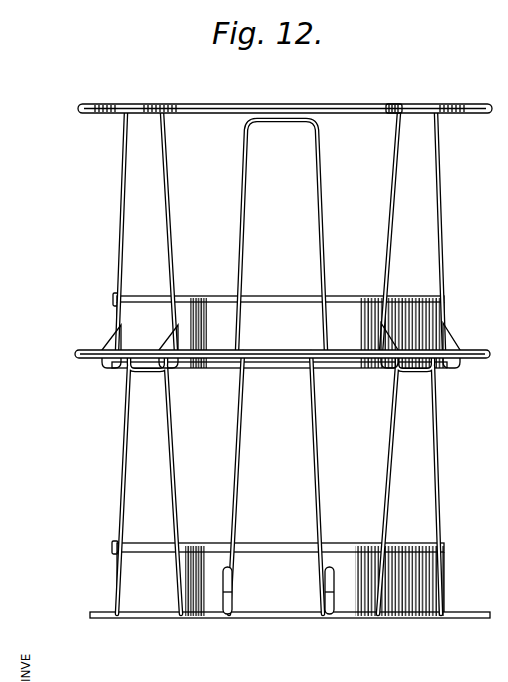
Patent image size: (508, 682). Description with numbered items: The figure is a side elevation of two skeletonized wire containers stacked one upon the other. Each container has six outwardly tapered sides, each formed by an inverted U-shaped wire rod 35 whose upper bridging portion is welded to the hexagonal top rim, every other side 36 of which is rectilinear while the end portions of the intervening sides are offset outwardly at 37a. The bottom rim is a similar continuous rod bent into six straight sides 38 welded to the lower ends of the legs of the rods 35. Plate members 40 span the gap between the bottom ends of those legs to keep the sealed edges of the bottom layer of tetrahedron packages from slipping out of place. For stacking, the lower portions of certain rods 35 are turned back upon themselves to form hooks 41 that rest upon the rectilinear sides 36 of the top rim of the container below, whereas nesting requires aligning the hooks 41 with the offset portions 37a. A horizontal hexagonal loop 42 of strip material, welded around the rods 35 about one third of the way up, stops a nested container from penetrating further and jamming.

The inverted U-shaped wire rod 35 is at (124, 224).
The rectilinear side of top rim 36 is at (277, 104).
The outwardly offset end portion 37a is at (413, 94).
The straight side of bottom rim 38 is at (300, 369).
The plate member 40 is at (260, 308).
The hook 41 is at (467, 318).
The hexagonal loop 42 is at (360, 286).